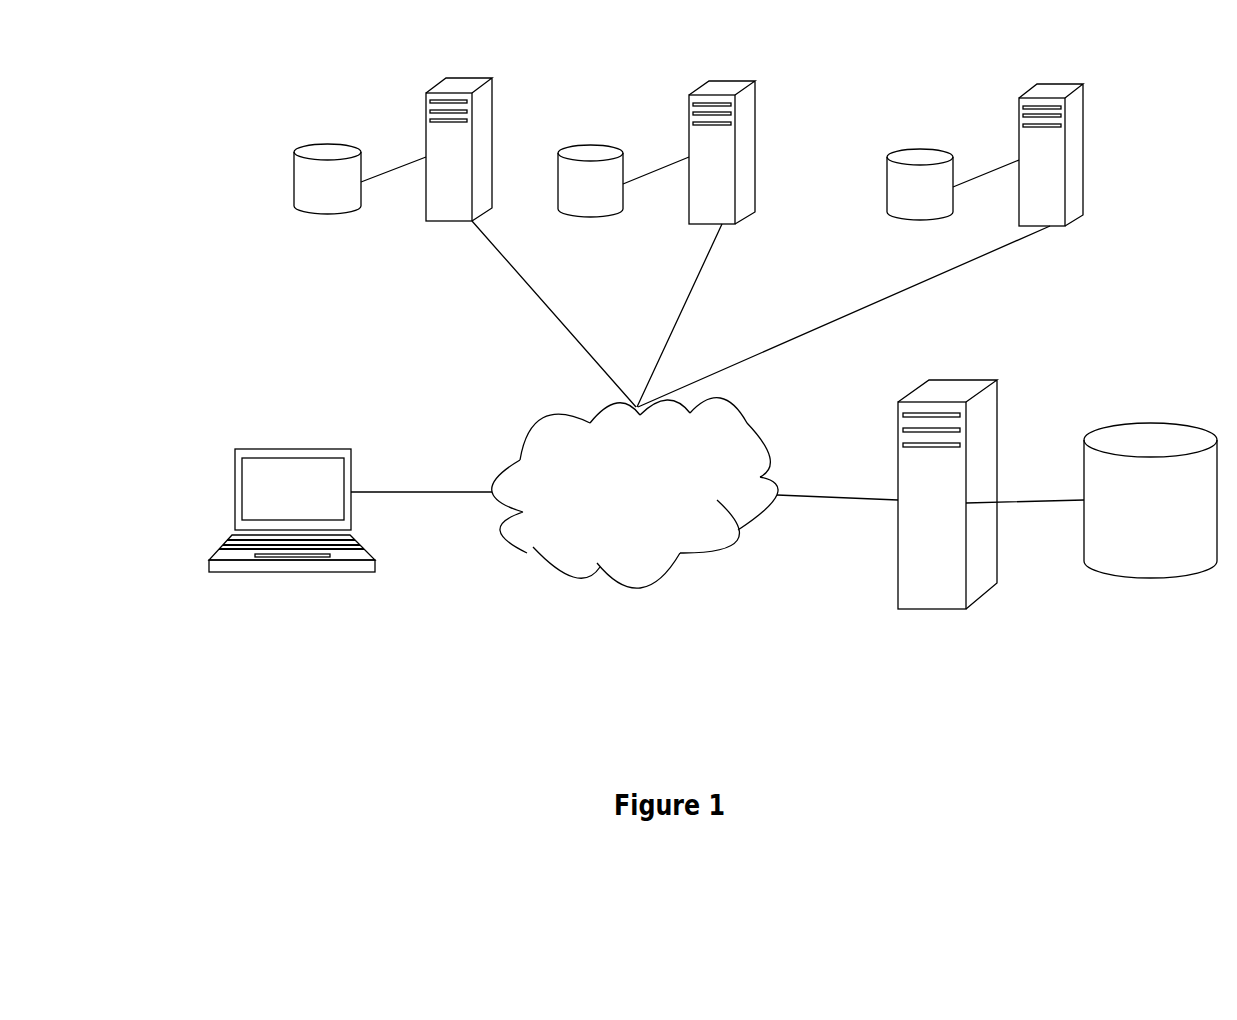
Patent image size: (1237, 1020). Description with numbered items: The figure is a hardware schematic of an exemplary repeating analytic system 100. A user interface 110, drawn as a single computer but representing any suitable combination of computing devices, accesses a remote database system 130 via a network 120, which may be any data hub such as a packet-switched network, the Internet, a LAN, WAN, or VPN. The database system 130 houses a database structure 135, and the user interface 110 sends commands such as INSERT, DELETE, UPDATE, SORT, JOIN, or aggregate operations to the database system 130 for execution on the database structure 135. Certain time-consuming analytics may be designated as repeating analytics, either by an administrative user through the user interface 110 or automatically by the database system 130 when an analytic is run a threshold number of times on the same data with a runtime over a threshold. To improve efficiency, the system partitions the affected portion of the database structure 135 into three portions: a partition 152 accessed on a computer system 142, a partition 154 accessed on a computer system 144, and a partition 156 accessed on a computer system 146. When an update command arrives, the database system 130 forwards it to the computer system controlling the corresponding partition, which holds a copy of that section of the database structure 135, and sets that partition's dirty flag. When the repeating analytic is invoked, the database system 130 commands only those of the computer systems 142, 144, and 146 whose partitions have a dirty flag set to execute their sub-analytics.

The system 100 is at (236, 106).
The user interface 110 is at (292, 510).
The network 120 is at (635, 493).
The database system 130 is at (947, 494).
The database structure 135 is at (1150, 500).
The computer system 142 is at (459, 149).
The computer system 144 is at (722, 152).
The computer system 146 is at (1051, 155).
The partition 152 is at (327, 182).
The partition 154 is at (590, 183).
The partition 156 is at (920, 187).